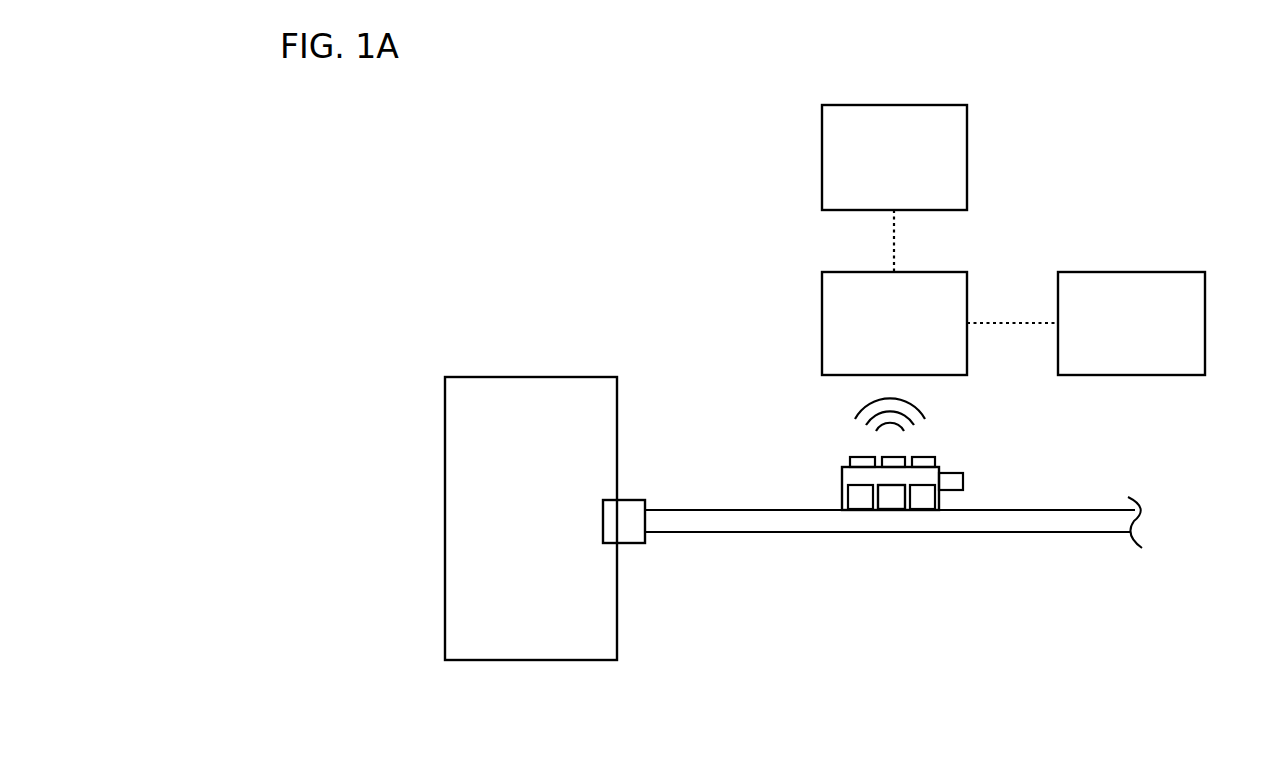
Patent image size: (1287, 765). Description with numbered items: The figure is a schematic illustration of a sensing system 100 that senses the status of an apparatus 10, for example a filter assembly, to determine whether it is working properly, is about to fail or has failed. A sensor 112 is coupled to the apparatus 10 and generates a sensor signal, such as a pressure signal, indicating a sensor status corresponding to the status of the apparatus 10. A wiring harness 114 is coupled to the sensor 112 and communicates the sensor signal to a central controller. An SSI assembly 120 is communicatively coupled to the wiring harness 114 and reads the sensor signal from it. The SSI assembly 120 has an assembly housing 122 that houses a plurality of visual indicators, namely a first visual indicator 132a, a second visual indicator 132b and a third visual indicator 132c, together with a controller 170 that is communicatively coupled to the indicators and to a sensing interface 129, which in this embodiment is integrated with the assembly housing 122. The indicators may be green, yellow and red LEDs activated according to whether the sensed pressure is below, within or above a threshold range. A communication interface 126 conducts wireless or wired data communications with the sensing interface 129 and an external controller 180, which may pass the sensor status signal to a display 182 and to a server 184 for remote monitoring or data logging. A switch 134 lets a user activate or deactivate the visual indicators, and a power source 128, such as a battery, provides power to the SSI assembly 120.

The apparatus 10 is at (531, 518).
The sensing system 100 is at (1132, 138).
The sensor 112 is at (630, 535).
The wiring harness 114 is at (733, 523).
The SSI assembly 120 is at (1036, 452).
The assembly housing 122 is at (842, 498).
The communication interface 126 is at (889, 506).
The power source 128 is at (921, 507).
The sensing interface 129 is at (881, 505).
The first visual indicator 132a is at (858, 462).
The second visual indicator 132b is at (900, 463).
The third visual indicator 132c is at (935, 462).
The switch 134 is at (963, 482).
The controller 170 is at (863, 506).
The external controller 180 is at (894, 323).
The display 182 is at (1131, 323).
The server 184 is at (894, 157).